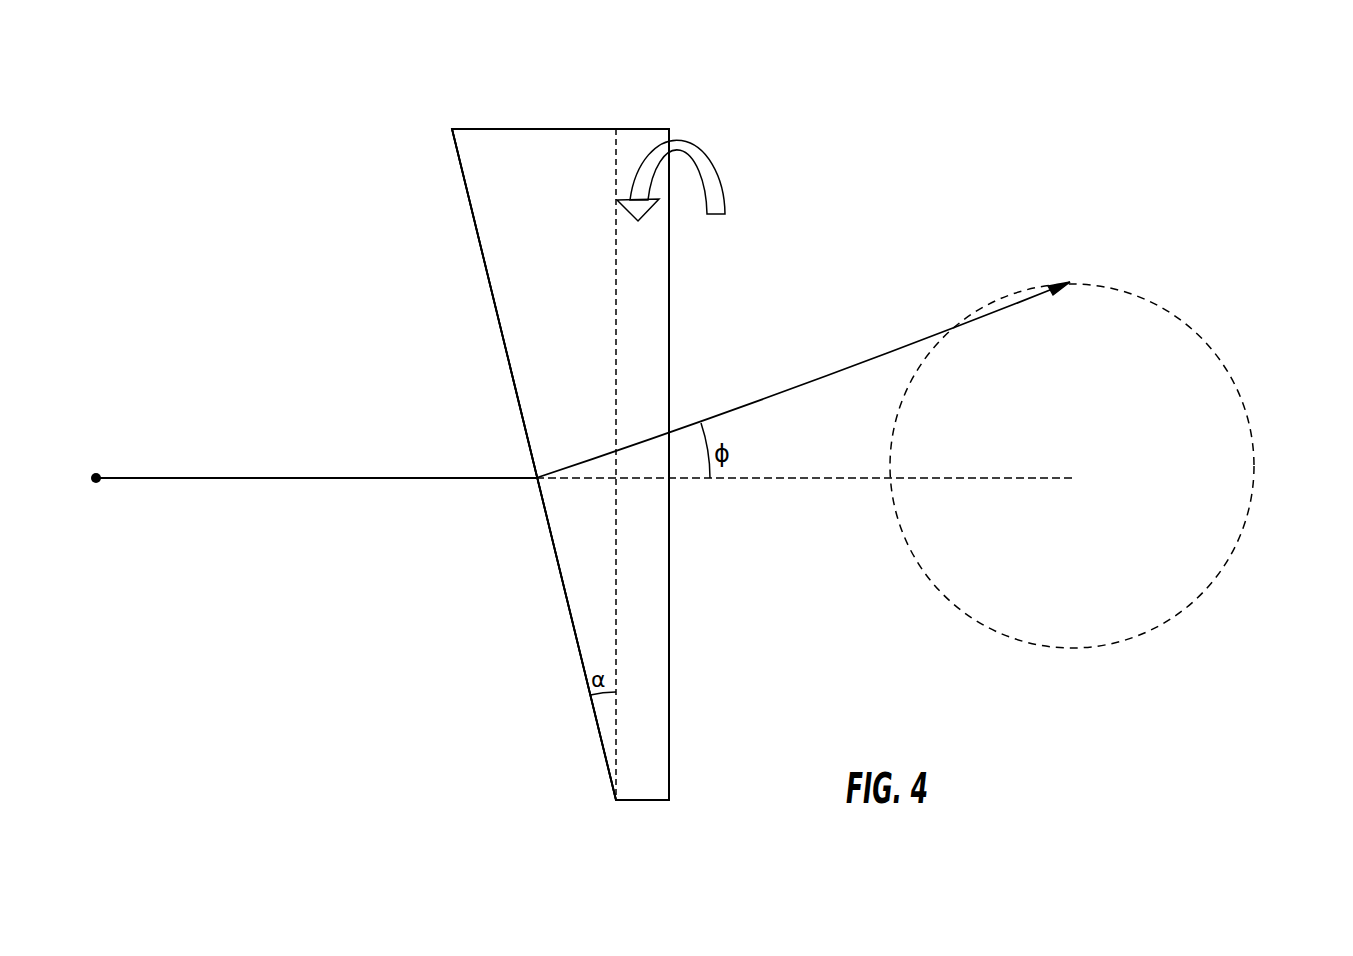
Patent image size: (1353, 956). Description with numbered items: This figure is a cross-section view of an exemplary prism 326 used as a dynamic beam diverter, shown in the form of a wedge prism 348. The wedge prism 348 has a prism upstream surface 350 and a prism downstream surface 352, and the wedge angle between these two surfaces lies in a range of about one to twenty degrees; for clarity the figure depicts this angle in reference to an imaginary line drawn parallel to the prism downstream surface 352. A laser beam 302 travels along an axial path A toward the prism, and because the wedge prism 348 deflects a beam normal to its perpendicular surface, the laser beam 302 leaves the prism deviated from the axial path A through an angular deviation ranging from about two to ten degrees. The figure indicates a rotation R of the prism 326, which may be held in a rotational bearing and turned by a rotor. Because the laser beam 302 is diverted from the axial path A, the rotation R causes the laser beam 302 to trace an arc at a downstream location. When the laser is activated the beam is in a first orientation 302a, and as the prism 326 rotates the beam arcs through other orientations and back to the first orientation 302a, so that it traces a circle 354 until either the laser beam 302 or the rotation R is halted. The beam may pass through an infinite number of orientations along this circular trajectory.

The laser beam 302 is at (209, 478).
The first orientation 302a is at (1070, 282).
The prism 326 is at (553, 157).
The wedge prism 348 is at (553, 157).
The prism upstream surface 350 is at (472, 218).
The prism downstream surface 352 is at (669, 340).
The circle 354 is at (1230, 380).
The rotation R is at (712, 153).
The axial path A is at (797, 478).